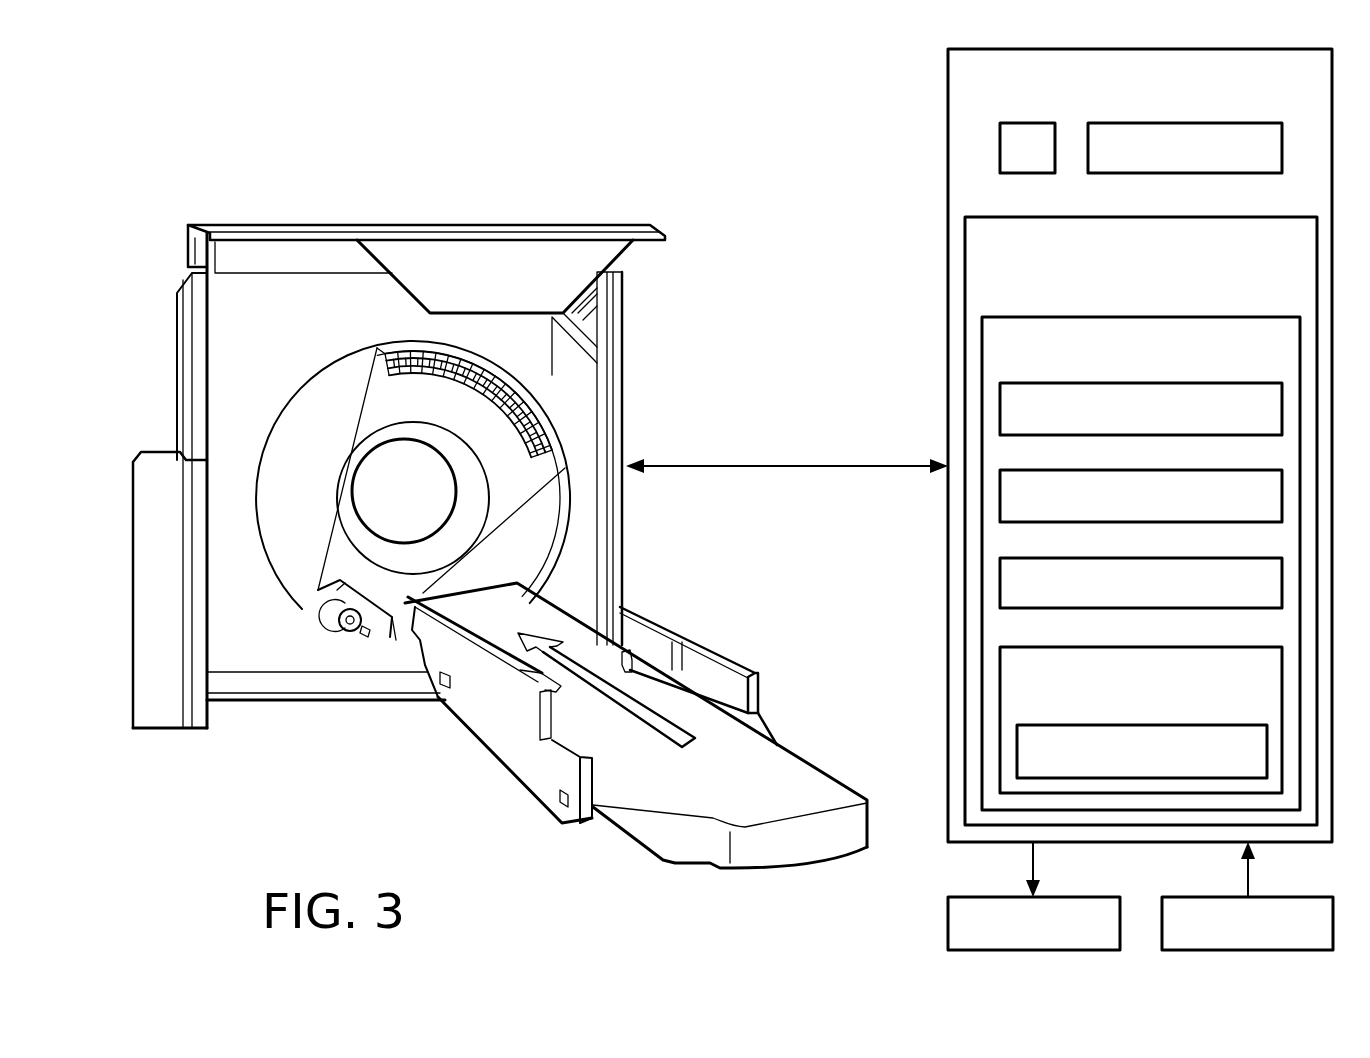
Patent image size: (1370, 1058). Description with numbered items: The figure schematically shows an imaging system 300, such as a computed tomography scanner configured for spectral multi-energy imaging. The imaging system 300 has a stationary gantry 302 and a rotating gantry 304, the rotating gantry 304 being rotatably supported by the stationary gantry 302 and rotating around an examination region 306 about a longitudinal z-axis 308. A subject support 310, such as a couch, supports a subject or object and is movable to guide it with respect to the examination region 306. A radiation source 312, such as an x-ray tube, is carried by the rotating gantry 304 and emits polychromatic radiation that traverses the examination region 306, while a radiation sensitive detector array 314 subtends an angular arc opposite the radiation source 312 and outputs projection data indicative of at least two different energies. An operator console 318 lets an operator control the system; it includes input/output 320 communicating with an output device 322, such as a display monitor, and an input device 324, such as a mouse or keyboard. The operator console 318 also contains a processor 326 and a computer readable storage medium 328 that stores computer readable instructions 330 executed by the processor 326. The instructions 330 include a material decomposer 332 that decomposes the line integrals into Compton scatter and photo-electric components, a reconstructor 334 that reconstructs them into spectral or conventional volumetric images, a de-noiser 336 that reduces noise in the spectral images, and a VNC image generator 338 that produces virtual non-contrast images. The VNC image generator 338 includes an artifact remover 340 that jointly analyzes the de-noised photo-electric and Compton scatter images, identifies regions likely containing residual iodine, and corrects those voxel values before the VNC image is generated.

The imaging system 300 is at (191, 158).
The stationary gantry 302 is at (197, 344).
The rotating gantry 304 is at (390, 398).
The examination region 306 is at (426, 500).
The z-axis 308 is at (643, 710).
The subject support 310 is at (773, 790).
The radiation source 312 is at (345, 625).
The radiation sensitive detector array 314 is at (522, 412).
The operator console 318 is at (945, 142).
The input/output (I/O) 320 is at (1030, 122).
The output device 322 is at (977, 897).
The input device 324 is at (1292, 897).
The processor 326 is at (1245, 122).
The computer readable storage medium 328 is at (1253, 217).
The computer readable instructions 330 is at (1237, 317).
The material decomposer 332 is at (1215, 383).
The reconstructor 334 is at (1215, 470).
The de-noiser 336 is at (1215, 558).
The VNC image generator 338 is at (1215, 647).
The artifact remover 340 is at (1203, 725).